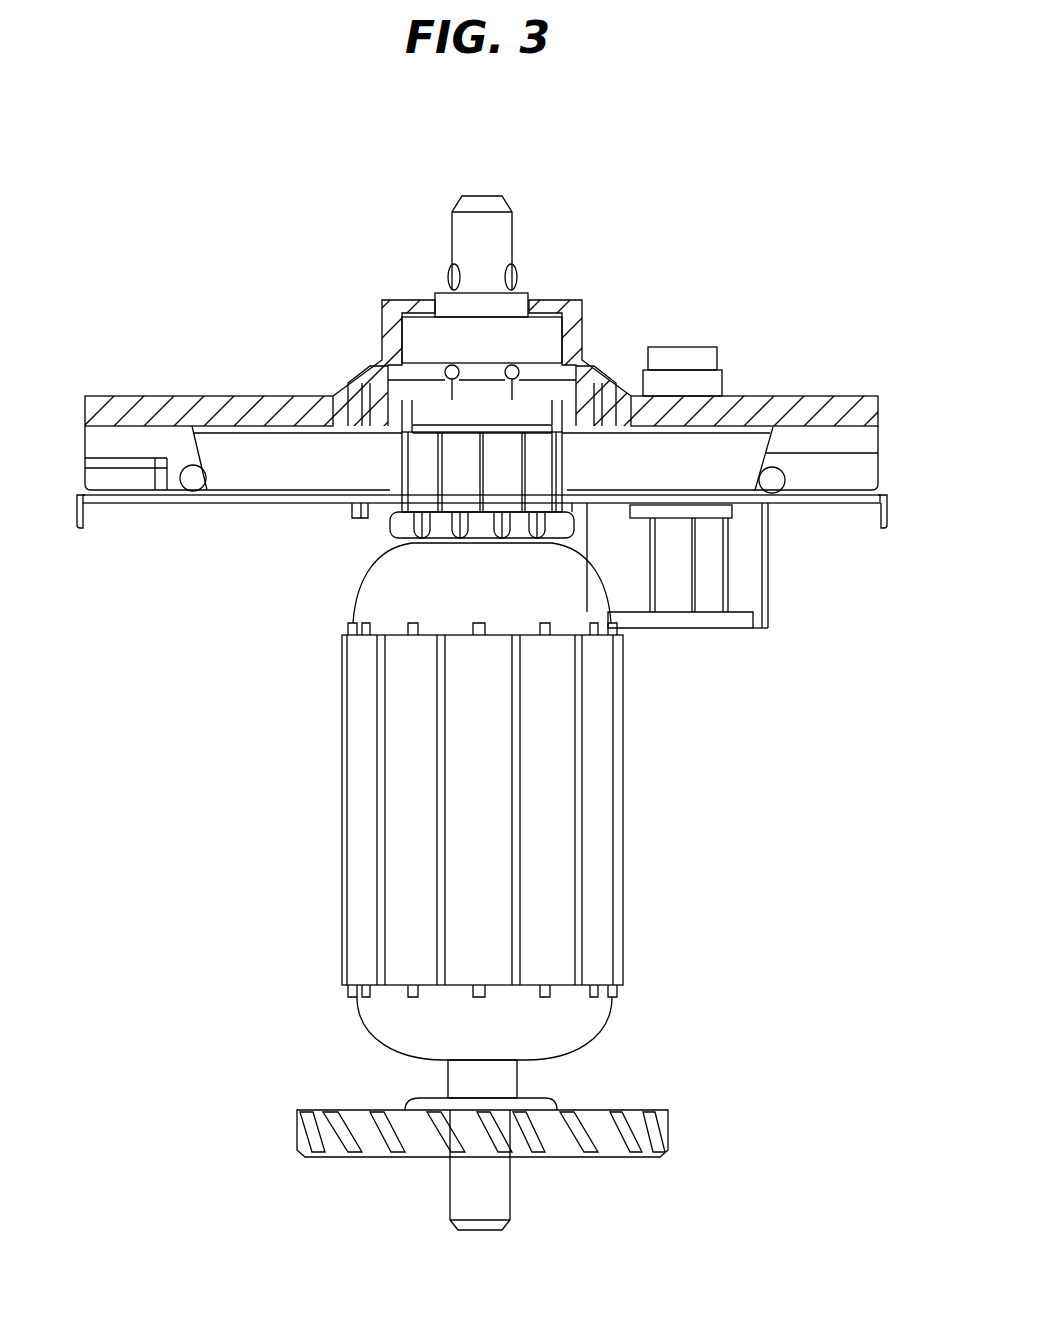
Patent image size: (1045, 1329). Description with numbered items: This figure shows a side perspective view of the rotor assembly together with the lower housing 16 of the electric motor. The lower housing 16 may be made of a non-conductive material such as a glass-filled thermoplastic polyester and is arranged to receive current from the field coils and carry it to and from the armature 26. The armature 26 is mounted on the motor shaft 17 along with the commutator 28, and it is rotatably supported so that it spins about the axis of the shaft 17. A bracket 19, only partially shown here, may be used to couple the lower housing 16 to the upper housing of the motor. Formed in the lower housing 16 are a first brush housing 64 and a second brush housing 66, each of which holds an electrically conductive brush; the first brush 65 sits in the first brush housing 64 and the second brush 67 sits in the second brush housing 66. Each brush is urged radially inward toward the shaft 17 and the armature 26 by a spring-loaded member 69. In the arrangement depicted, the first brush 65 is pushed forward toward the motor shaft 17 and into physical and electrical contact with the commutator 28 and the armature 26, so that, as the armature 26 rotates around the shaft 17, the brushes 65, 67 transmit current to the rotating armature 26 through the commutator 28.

The lower housing 16 is at (383, 300).
The motor shaft 17 is at (479, 193).
The bracket 19 is at (708, 600).
The armature 26 is at (340, 820).
The commutator 28 is at (387, 514).
The first brush housing 64 is at (150, 394).
The first brush 65 is at (250, 490).
The second brush housing 66 is at (846, 395).
The second brush 67 is at (878, 453).
The spring-loaded member 69 is at (177, 490).